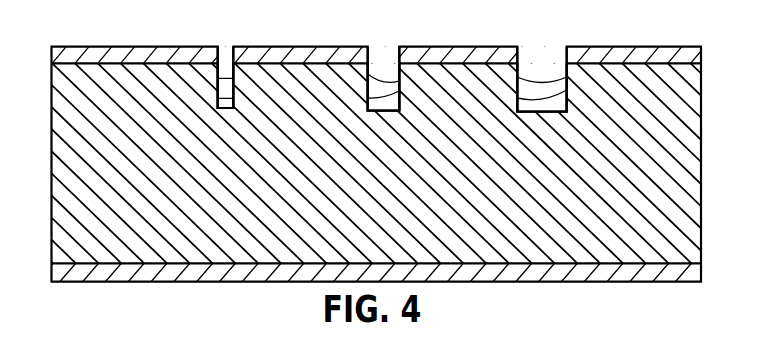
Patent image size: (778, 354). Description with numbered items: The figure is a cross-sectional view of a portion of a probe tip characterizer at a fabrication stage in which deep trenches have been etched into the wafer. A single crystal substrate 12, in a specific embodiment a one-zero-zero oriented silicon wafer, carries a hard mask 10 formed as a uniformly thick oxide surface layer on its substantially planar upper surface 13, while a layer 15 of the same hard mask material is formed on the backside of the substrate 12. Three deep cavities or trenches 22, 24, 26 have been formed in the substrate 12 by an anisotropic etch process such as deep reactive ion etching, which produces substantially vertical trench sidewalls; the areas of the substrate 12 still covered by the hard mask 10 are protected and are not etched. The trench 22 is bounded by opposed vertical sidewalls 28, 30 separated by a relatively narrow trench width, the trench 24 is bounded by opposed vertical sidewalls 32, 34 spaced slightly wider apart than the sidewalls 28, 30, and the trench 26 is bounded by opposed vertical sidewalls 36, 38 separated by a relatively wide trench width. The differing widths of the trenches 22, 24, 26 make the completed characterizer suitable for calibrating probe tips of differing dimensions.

The hard mask 10 is at (702, 58).
The single crystal substrate 12 is at (701, 138).
The upper surface 13 is at (132, 47).
The layer 15 is at (701, 273).
The trench 22 is at (226, 74).
The trench 24 is at (383, 73).
The trench 26 is at (542, 72).
The vertical sidewall 28 is at (217, 77).
The vertical sidewall 30 is at (234, 92).
The vertical sidewall 32 is at (367, 77).
The vertical sidewall 34 is at (400, 84).
The vertical sidewall 36 is at (518, 77).
The vertical sidewall 38 is at (567, 84).